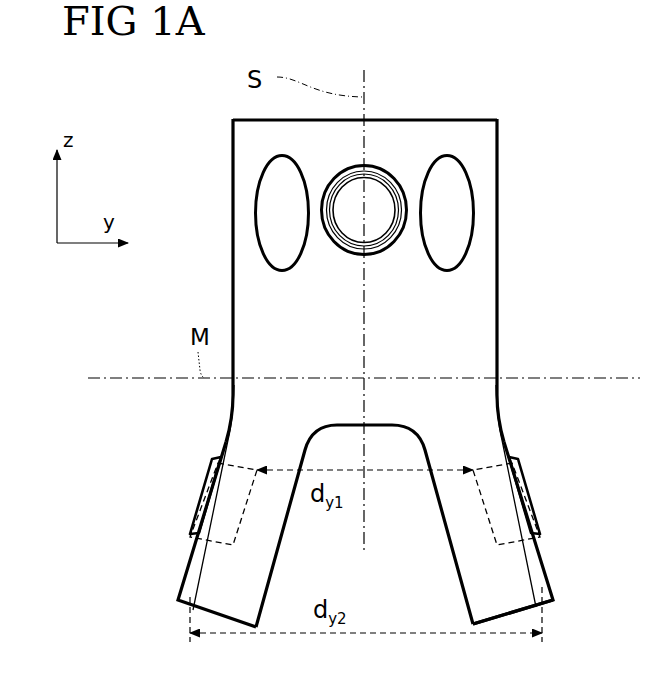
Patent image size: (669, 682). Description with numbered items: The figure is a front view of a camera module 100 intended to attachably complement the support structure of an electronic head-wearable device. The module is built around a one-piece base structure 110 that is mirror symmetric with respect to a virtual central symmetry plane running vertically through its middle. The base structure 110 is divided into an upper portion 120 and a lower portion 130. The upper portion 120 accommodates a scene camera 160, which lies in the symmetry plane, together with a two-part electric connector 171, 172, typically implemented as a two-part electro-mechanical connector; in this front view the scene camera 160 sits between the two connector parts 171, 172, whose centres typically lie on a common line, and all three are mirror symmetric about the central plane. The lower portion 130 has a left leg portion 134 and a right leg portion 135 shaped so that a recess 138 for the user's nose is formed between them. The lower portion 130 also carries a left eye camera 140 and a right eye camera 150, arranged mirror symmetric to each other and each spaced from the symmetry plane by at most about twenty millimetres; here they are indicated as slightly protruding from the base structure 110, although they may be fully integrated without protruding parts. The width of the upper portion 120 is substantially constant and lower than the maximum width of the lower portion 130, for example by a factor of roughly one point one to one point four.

The camera module 100 is at (391, 37).
The one-piece base structure 110 is at (451, 112).
The upper portion 120 is at (202, 295).
The lower portion 130 is at (157, 570).
The left leg portion 134 is at (564, 543).
The right leg portion 135 is at (304, 536).
The recess 138 is at (401, 608).
The left eye camera 140 is at (543, 493).
The right eye camera 150 is at (181, 490).
The scene camera 160 is at (385, 152).
The first part of two-part electric connector 171 is at (288, 283).
The second part of two-part electric connector 172 is at (446, 283).